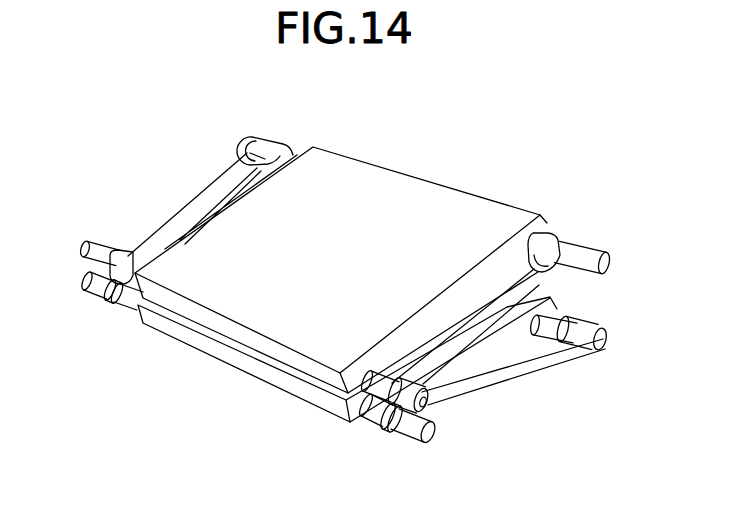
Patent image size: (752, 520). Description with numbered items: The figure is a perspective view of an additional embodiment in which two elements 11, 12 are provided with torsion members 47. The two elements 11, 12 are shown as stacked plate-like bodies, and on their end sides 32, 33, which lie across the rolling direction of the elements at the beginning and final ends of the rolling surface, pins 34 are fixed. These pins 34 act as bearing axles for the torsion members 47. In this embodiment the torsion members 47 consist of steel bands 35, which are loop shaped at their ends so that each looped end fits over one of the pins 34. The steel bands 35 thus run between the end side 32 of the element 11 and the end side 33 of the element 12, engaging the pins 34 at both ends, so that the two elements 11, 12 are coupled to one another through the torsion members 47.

The element 11 is at (410, 184).
The element 12 is at (243, 368).
The end side 32 is at (544, 220).
The end side 33 is at (528, 334).
The pins 34 is at (606, 338).
The steel bands 35 is at (146, 258).
The torsion members 47 is at (197, 187).